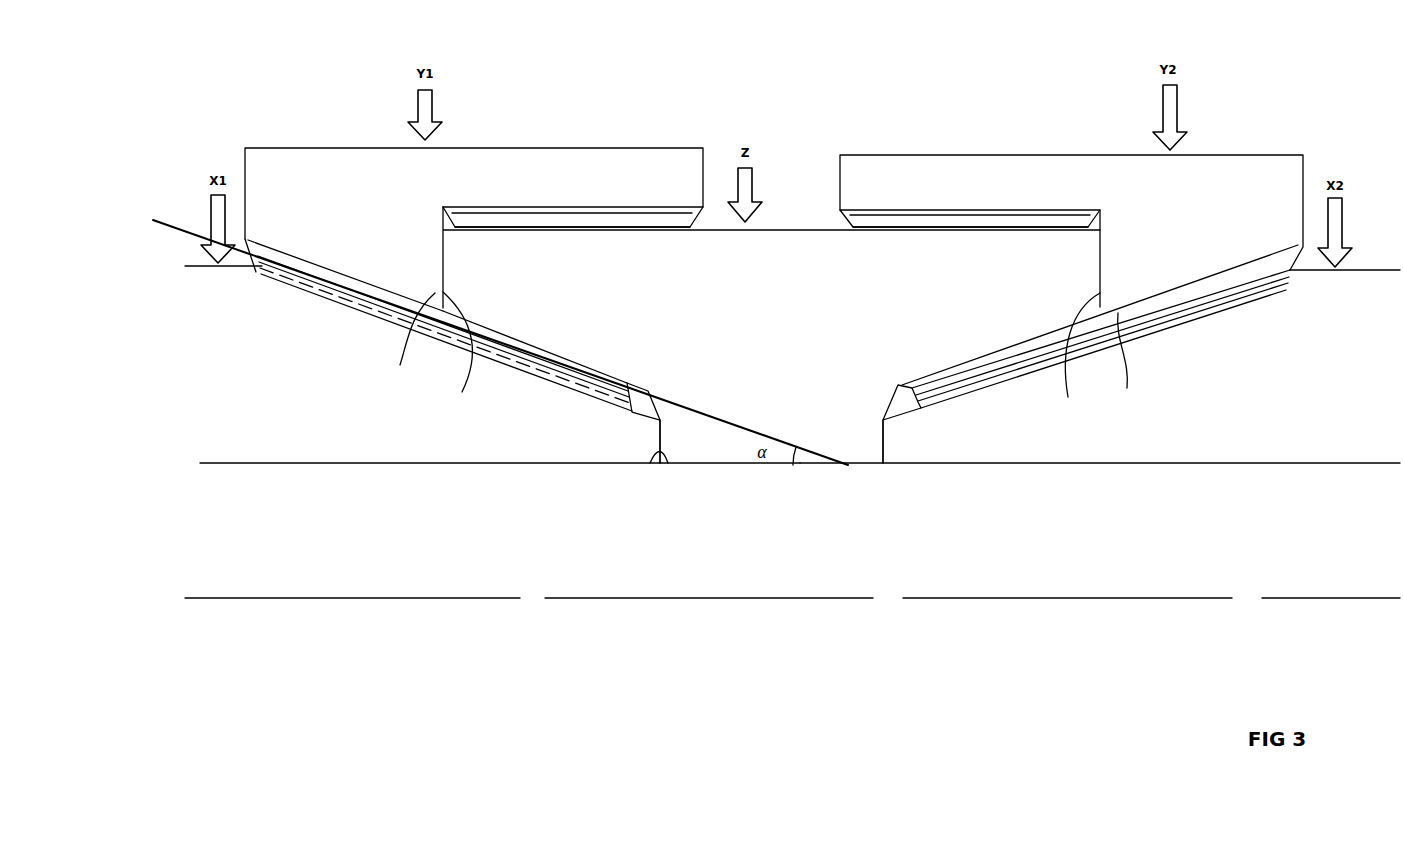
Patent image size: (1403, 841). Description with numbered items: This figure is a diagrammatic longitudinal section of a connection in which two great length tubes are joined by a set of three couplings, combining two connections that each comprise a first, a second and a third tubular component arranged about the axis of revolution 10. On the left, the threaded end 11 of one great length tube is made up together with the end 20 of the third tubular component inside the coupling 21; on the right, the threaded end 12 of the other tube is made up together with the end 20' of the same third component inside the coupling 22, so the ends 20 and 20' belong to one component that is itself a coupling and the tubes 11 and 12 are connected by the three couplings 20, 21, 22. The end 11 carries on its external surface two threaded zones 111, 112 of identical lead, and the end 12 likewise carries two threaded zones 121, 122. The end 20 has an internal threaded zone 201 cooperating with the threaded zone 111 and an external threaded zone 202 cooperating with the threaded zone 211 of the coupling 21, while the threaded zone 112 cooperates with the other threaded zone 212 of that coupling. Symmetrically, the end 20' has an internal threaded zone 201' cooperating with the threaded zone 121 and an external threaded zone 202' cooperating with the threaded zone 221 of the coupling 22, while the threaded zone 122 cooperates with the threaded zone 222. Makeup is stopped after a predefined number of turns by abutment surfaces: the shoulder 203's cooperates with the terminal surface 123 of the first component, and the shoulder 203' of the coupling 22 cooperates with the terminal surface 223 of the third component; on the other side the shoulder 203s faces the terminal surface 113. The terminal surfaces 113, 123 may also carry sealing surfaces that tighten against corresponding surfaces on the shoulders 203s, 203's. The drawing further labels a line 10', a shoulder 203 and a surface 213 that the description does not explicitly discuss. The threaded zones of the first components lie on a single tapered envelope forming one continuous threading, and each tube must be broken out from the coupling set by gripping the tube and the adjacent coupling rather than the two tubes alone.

The axis of revolution 10 is at (792, 632).
The upper material surface 10' is at (778, 196).
The end of first tubular component 11 is at (272, 445).
The end of first tubular component 12 is at (1222, 447).
The end of third tubular component 20 is at (771, 171).
The end of third tubular component 20' is at (1103, 165).
The second tubular component (coupling) 21 is at (528, 157).
The second tubular component (coupling) 22 is at (1012, 155).
The threaded zone 111 is at (560, 380).
The threaded zone 112 is at (350, 308).
The terminal surface 113 is at (650, 463).
The threaded zone 121 is at (990, 380).
The threaded zone 122 is at (1177, 313).
The terminal surface 123 is at (883, 443).
The threaded zone 201 is at (445, 326).
The threaded zone 201' is at (1101, 332).
The threaded zone 202 is at (576, 260).
The threaded zone 202' is at (970, 254).
The left pivot region 203 is at (463, 355).
The shoulder 203' is at (1074, 362).
The shoulder 203s is at (668, 463).
The shoulder 203's is at (871, 457).
The threaded zone 211 is at (625, 212).
The threaded zone 212 is at (317, 265).
The left holder edge 213 is at (398, 349).
The threaded zone 221 is at (884, 215).
The threaded zone 222 is at (1207, 273).
The terminal surface 223 is at (1145, 364).